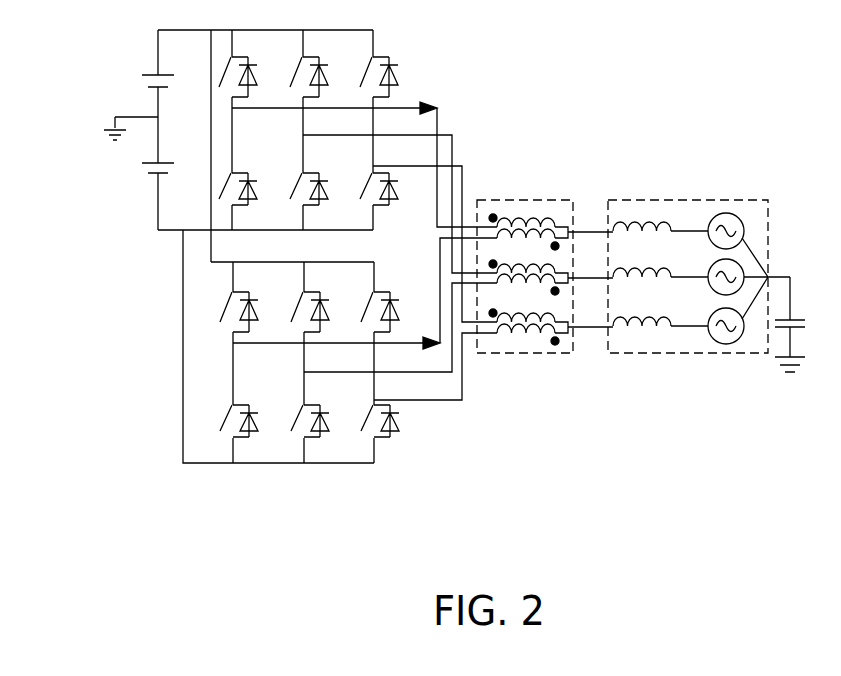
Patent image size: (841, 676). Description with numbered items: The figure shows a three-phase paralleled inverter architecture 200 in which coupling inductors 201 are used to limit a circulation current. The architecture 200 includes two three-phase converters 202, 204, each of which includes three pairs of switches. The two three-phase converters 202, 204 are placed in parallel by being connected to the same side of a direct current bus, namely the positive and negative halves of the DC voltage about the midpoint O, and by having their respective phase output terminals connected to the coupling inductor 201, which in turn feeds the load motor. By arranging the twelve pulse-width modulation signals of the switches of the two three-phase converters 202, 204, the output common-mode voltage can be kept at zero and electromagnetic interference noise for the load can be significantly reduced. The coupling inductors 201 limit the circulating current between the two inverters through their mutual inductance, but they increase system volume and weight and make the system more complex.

The three-phase paralleled inverter architecture 200 is at (825, 54).
The coupling inductor 201 is at (573, 213).
The three-phase converter 202 is at (162, 258).
The three-phase converter 204 is at (219, 496).